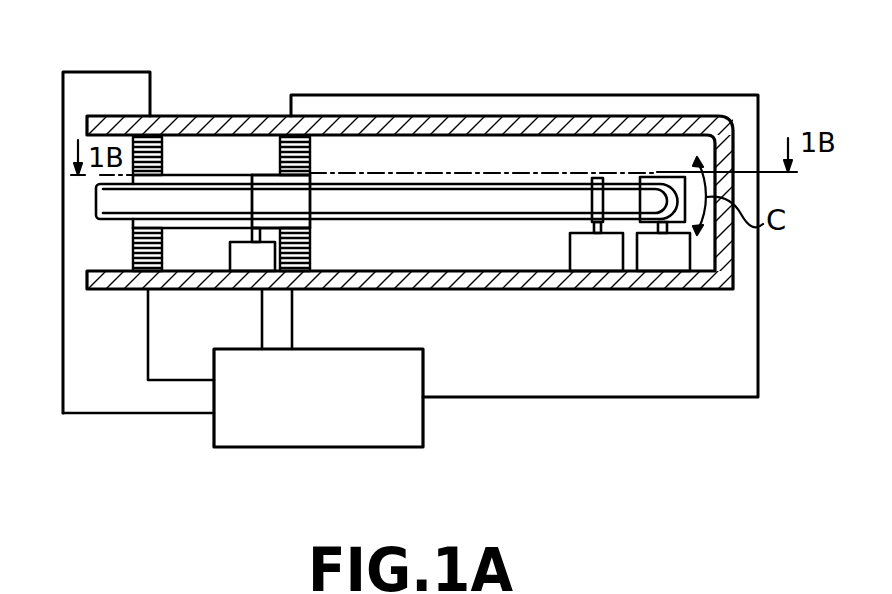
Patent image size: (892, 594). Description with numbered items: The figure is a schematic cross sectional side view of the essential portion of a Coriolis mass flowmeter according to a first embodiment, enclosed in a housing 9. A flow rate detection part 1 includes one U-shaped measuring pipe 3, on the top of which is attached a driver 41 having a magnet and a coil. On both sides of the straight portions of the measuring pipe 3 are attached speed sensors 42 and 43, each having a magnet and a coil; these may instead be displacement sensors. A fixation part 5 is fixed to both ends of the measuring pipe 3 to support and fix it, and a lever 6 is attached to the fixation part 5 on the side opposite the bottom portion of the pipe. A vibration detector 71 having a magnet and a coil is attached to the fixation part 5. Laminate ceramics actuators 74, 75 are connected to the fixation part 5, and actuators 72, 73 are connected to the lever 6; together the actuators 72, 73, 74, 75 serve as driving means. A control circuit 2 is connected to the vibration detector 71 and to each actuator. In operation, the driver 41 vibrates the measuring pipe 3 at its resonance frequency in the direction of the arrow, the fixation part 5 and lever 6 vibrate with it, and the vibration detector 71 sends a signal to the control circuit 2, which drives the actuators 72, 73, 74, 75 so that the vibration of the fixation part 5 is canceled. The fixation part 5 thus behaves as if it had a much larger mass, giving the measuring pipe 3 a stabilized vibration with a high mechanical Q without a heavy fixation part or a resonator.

The flow rate detector 1 is at (354, 92).
The control circuit 2 is at (342, 448).
The measuring pipe 3 is at (491, 198).
The fixation part 5 is at (265, 188).
The lever 6 is at (201, 180).
The housing 9 is at (463, 277).
The driver 41 is at (670, 253).
The sensor 42 is at (598, 271).
The sensor 43 is at (596, 256).
The vibration detector 71 is at (247, 258).
The actuator 72 is at (133, 252).
The actuator 73 is at (156, 140).
The actuator 74 is at (311, 246).
The actuator 75 is at (311, 148).